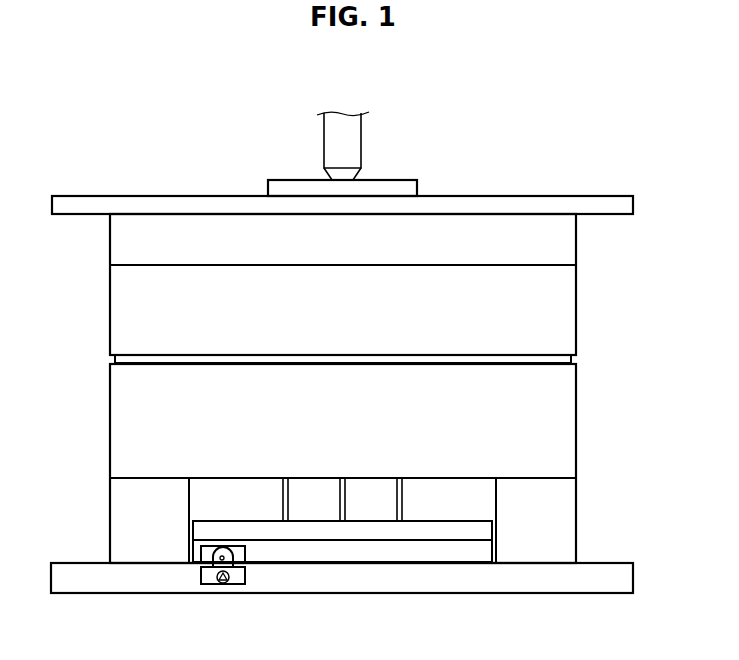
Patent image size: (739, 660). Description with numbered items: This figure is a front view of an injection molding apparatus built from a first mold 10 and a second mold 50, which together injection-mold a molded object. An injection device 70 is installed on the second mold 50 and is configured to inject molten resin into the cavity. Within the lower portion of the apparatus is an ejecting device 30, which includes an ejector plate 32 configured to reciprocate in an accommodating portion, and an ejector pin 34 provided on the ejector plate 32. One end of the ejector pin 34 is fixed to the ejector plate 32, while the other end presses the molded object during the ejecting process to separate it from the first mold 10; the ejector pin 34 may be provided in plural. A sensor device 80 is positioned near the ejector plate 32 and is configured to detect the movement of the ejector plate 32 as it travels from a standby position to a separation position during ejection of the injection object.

The first mold 10 is at (108, 427).
The second mold 50 is at (108, 257).
The injection device 70 is at (320, 135).
The ejecting device 30 is at (455, 520).
The ejector plate 32 is at (485, 529).
The ejector pin 34 is at (403, 495).
The sensor device 80 is at (248, 584).